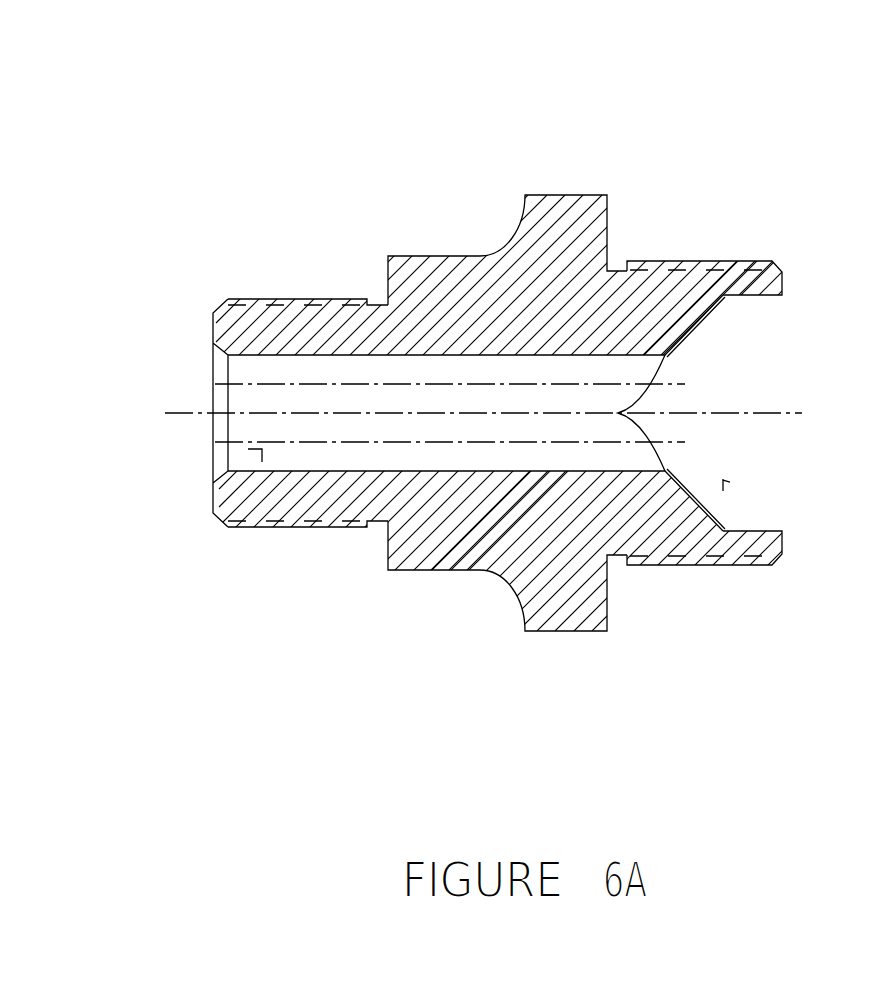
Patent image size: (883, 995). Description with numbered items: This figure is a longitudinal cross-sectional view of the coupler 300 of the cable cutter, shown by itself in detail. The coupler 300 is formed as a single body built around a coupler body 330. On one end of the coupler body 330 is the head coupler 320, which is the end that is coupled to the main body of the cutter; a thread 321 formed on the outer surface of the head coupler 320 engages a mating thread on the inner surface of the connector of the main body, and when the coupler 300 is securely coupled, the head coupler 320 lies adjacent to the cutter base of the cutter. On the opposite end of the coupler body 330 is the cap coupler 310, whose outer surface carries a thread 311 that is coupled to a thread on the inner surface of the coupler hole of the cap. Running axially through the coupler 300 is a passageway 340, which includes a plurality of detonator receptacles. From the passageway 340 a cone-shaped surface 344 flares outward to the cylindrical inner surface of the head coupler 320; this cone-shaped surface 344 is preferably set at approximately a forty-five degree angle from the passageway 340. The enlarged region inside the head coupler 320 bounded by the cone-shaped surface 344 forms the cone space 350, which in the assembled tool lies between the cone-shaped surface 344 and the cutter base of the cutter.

The coupler 300 is at (302, 135).
The cap coupler 310 is at (320, 308).
The thread 311 is at (272, 303).
The head coupler 320 is at (650, 273).
The thread 321 is at (725, 272).
The coupler body 330 is at (567, 623).
The passageway 340 is at (393, 469).
The cone-shaped surface 344 is at (712, 317).
The cone space 350 is at (258, 452).